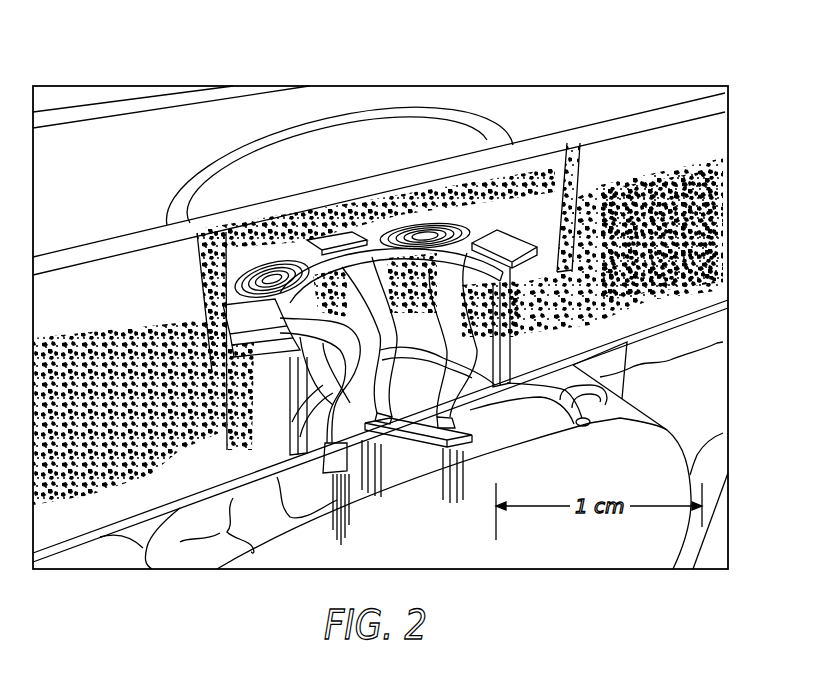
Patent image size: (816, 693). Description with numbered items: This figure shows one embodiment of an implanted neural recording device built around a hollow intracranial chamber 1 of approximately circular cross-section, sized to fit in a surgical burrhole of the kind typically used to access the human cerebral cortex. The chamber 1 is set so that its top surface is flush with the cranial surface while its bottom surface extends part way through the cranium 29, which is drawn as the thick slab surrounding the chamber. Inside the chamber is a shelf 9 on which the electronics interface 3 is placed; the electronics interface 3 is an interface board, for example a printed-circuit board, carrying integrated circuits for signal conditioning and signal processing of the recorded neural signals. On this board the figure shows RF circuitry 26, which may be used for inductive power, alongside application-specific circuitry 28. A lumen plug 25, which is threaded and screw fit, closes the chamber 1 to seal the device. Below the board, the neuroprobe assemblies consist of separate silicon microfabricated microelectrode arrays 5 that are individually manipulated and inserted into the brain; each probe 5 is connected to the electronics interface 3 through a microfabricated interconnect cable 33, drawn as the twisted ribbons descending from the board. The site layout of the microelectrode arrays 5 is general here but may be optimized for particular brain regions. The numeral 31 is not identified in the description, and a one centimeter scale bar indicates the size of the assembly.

The hollow intracranial chamber 1 is at (200, 158).
The lumen plug 25 is at (285, 166).
The cranium 29 is at (693, 146).
The application-specific circuitry 28 is at (507, 247).
The shelf 9 is at (229, 375).
The RF circuitry 26 is at (238, 278).
The electronics interface 3 is at (222, 320).
The interconnect cable 33 is at (290, 447).
The cover 31 is at (262, 558).
The microelectrode arrays 5 is at (350, 531).